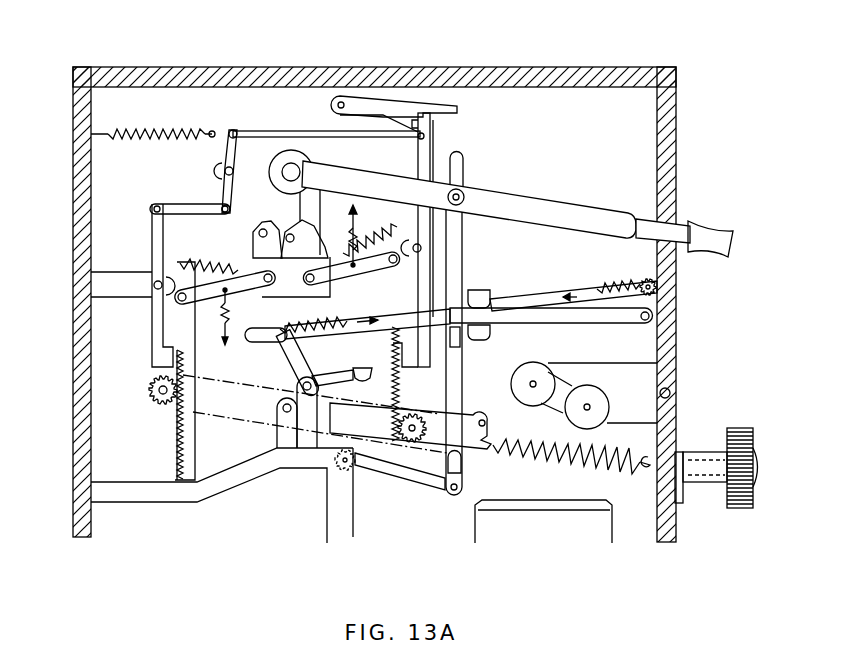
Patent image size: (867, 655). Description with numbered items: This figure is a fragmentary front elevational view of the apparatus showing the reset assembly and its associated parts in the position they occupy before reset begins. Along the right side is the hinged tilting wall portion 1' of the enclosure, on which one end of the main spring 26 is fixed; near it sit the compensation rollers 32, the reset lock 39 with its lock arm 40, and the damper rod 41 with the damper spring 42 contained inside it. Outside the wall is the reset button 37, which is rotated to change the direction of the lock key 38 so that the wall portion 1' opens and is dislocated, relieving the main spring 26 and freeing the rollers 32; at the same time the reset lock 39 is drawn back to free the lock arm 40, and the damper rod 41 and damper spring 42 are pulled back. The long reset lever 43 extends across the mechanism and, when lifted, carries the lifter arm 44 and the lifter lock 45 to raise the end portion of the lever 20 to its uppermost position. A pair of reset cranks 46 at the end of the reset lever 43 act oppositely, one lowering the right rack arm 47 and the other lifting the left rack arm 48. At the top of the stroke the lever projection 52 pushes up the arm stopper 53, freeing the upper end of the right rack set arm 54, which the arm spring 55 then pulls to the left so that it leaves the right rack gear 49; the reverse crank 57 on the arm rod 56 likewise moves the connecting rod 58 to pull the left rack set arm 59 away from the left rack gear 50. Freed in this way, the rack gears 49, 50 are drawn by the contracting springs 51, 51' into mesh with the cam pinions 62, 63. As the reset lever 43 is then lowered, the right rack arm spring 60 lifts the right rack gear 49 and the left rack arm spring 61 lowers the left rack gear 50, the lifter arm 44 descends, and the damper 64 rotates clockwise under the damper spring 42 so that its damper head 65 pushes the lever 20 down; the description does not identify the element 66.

The hinged tilting wall portion 1' is at (390, 304).
The lever 20 is at (265, 405).
The main spring 26 is at (582, 466).
The compensation rollers 32 is at (603, 407).
The reset button 37 is at (740, 503).
The lock key 38 is at (680, 507).
The reset lock 39 is at (618, 320).
The lock arm 40 is at (505, 440).
The damper rod 41 is at (537, 293).
The damper spring 42 is at (690, 222).
The reset lever 43 is at (723, 247).
The lifter arm 44 is at (453, 247).
The lifter lock 45 is at (462, 472).
The reset cranks 46 is at (292, 226).
The right rack arm 47 is at (305, 415).
The left rack arm 48 is at (203, 275).
The right rack gear 49 is at (400, 440).
The left rack gear 50 is at (180, 448).
The spring 51 is at (326, 136).
The spring 51' is at (99, 209).
The lever projection 52 is at (500, 218).
The arm stopper 53 is at (400, 103).
The right rack set arm 54 is at (424, 150).
The arm spring 55 is at (178, 128).
The arm rod 56 is at (300, 150).
The reverse crank 57 is at (232, 200).
The connecting rod 58 is at (177, 207).
The left rack set arm 59 is at (183, 312).
The right rack arm spring 60 is at (347, 215).
The left rack arm spring 61 is at (225, 322).
The cam pinion 62 is at (418, 445).
The cam pinion 63 is at (152, 393).
The damper 64 is at (293, 360).
The damper head 65 is at (318, 400).
The link 66 is at (363, 385).